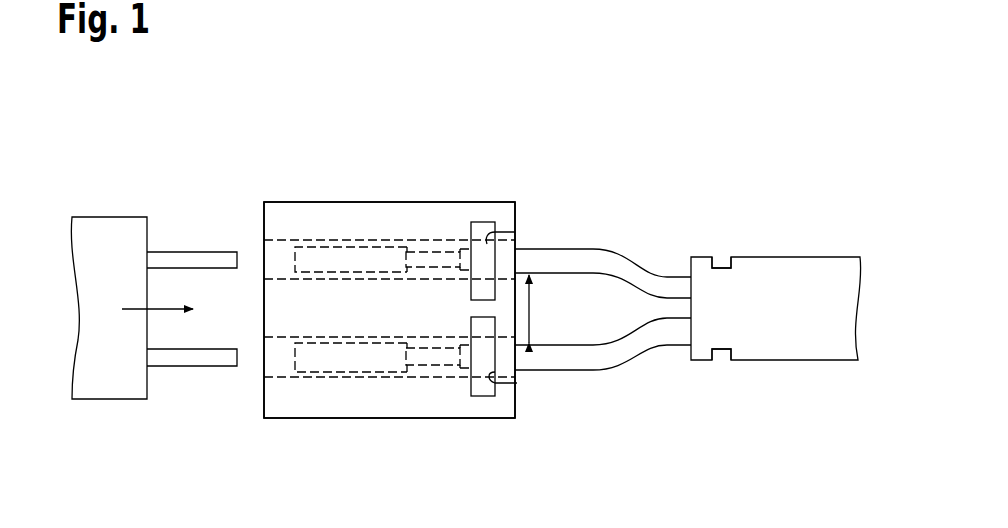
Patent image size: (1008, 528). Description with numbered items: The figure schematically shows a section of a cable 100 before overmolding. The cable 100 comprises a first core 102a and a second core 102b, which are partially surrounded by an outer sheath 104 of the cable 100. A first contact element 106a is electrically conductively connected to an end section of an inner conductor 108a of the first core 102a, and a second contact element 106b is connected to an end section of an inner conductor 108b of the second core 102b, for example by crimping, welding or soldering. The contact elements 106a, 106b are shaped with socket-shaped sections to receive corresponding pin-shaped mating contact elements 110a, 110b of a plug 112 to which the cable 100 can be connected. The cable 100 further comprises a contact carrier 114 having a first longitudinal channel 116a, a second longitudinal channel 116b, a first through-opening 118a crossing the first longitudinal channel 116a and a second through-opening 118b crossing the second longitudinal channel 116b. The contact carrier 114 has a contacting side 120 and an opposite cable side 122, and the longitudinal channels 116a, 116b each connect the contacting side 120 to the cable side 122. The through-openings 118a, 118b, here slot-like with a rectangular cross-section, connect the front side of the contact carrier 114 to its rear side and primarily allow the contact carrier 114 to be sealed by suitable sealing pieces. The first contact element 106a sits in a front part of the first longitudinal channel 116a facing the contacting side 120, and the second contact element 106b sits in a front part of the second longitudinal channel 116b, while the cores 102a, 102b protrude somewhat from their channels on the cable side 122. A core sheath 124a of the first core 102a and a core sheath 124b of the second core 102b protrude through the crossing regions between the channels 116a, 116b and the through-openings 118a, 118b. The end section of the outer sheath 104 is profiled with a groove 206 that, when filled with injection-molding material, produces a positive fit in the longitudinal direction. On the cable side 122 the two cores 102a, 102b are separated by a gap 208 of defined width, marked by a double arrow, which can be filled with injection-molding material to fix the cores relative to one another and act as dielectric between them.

The cable 100 is at (665, 158).
The first core 102a is at (643, 263).
The second core 102b is at (645, 350).
The outer sheath 104 is at (828, 257).
The first contact element 106a is at (425, 248).
The second contact element 106b is at (380, 372).
The inner conductor 108a is at (455, 250).
The inner conductor 108b is at (427, 372).
The mating contact element 110a is at (182, 252).
The mating contact element 110b is at (207, 367).
The plug 112 is at (95, 200).
The contact carrier 114 is at (288, 202).
The first longitudinal channel 116a is at (360, 240).
The second longitudinal channel 116b is at (320, 377).
The first through-opening 118a is at (490, 222).
The second through-opening 118b is at (485, 396).
The contacting side 120 is at (263, 227).
The cable side 122 is at (519, 207).
The core sheath 124a is at (515, 232).
The core sheath 124b is at (517, 383).
The groove 206 is at (720, 265).
The gap 208 is at (598, 318).